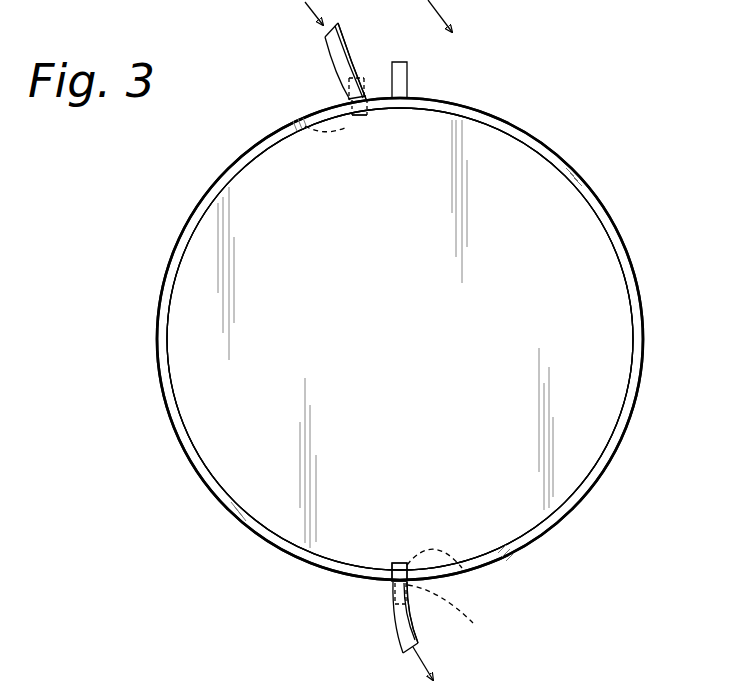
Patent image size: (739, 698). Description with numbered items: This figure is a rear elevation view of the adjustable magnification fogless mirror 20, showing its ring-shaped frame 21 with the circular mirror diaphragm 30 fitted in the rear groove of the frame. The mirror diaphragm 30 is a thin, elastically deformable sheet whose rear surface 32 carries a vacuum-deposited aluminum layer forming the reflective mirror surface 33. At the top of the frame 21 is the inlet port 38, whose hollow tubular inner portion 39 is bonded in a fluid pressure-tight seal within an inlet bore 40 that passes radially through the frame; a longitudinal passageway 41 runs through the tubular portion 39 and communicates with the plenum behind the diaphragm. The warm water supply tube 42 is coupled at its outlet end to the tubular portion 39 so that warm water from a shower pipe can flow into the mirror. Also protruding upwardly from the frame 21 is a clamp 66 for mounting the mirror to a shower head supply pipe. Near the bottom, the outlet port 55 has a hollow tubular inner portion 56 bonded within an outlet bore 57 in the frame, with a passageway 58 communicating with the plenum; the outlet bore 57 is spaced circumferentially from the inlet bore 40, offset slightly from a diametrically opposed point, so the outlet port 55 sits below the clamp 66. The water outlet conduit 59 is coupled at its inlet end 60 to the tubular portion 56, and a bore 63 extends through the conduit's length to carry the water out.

The adjustable magnification fogless mirror 20 is at (146, 237).
The ring-shaped frame 21 is at (182, 472).
The mirror diaphragm 30 is at (562, 503).
The rear surface 32 is at (573, 440).
The reflective mirror surface 33 is at (400, 339).
The inlet port 38 is at (345, 83).
The hollow tubular inner portion 39 is at (370, 113).
The inlet bore 40 is at (297, 123).
The passageway 41 is at (358, 117).
The warm water supply tube 42 is at (358, 50).
The outlet port 55 is at (383, 593).
The hollow tubular inner portion 56 is at (458, 616).
The outlet bore 57 is at (462, 568).
The passageway 58 is at (402, 562).
The water outlet conduit 59 is at (465, 0).
The inlet end 60 is at (392, 582).
The bore 63 is at (437, 0).
The clamp 66 is at (408, 77).